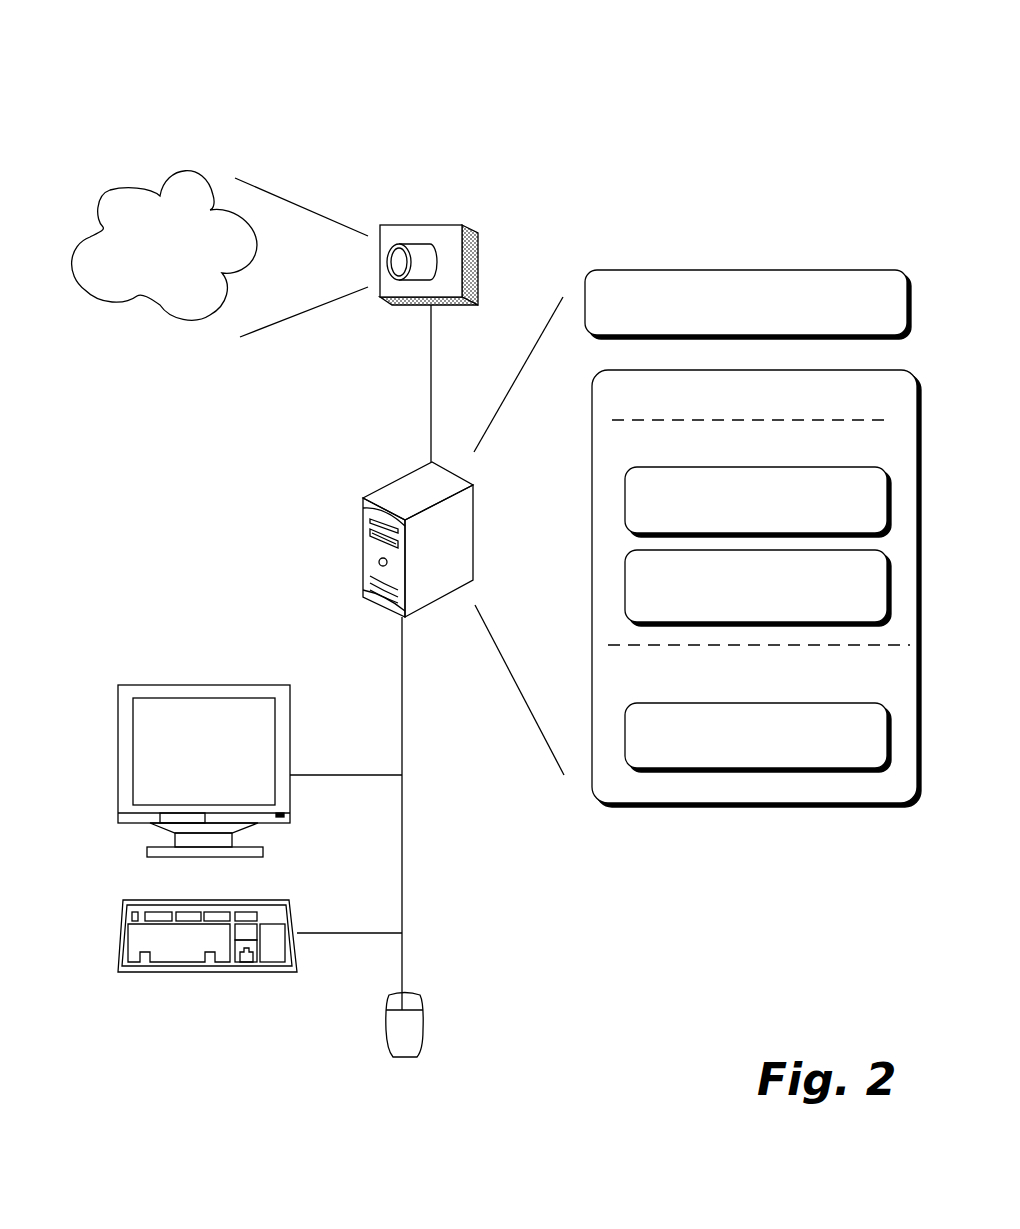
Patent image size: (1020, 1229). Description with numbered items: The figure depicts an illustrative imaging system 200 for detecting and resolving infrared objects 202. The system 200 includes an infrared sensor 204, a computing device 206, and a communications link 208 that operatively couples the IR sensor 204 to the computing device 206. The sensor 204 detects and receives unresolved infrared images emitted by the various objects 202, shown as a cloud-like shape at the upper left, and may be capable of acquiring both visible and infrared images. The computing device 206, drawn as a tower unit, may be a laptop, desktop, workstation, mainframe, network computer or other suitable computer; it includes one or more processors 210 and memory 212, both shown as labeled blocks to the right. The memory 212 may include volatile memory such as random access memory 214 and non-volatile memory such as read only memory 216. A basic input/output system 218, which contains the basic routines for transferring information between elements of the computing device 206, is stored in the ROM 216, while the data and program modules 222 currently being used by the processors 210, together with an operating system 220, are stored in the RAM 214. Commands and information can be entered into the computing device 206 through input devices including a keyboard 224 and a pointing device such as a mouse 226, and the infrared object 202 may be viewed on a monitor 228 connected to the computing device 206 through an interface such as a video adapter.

The imaging system 200 is at (740, 58).
The infrared object 202 is at (213, 165).
The infrared (IR) sensor 204 is at (416, 218).
The computing device 206 is at (480, 487).
The communications link 208 is at (427, 404).
The processor(s) 210 is at (748, 304).
The memory 212 is at (756, 588).
The random access memory (RAM) 214 is at (758, 528).
The read only memory (ROM) 216 is at (758, 722).
The basic input/output system (BIOS) 218 is at (758, 737).
The operating system 220 is at (758, 502).
The program modules 222 is at (758, 588).
The keyboard 224 is at (265, 896).
The pointing device (mouse) 226 is at (427, 1006).
The monitor 228 is at (274, 681).